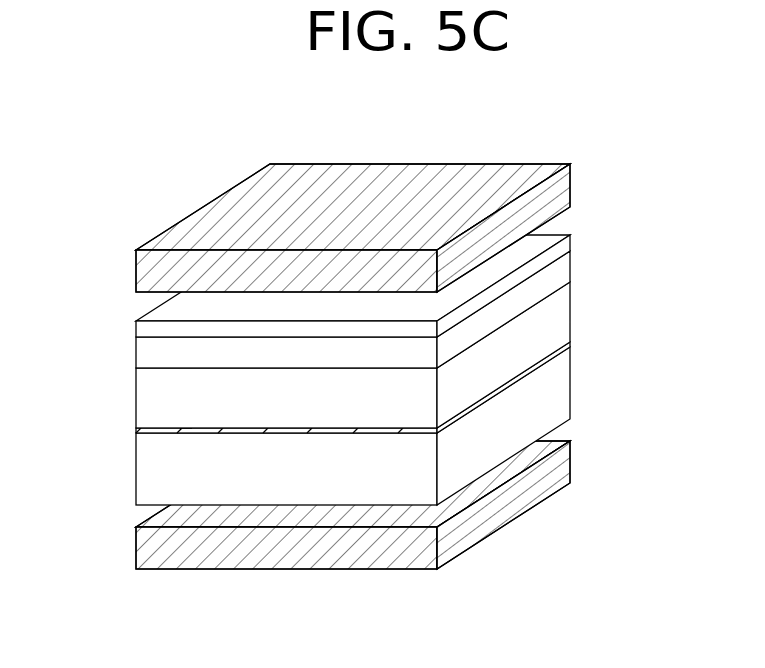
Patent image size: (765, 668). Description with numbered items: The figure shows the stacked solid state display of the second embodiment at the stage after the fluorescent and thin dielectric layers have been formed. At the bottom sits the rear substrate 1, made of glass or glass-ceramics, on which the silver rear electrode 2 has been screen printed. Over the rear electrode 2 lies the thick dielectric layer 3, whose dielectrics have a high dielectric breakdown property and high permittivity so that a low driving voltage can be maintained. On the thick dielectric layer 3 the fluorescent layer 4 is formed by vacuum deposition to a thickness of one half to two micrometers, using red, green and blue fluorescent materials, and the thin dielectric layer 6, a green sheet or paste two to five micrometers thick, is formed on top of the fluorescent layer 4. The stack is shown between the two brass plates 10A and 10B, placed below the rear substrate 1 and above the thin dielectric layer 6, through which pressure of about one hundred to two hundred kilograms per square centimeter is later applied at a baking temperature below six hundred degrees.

The brass plate 10A is at (560, 470).
The brass plate 10B is at (560, 190).
The rear substrate 1 is at (558, 388).
The rear electrode 2 is at (190, 429).
The thick dielectric layer 3 is at (558, 319).
The fluorescent layer 4 is at (558, 269).
The thin dielectric layer 6 is at (560, 241).